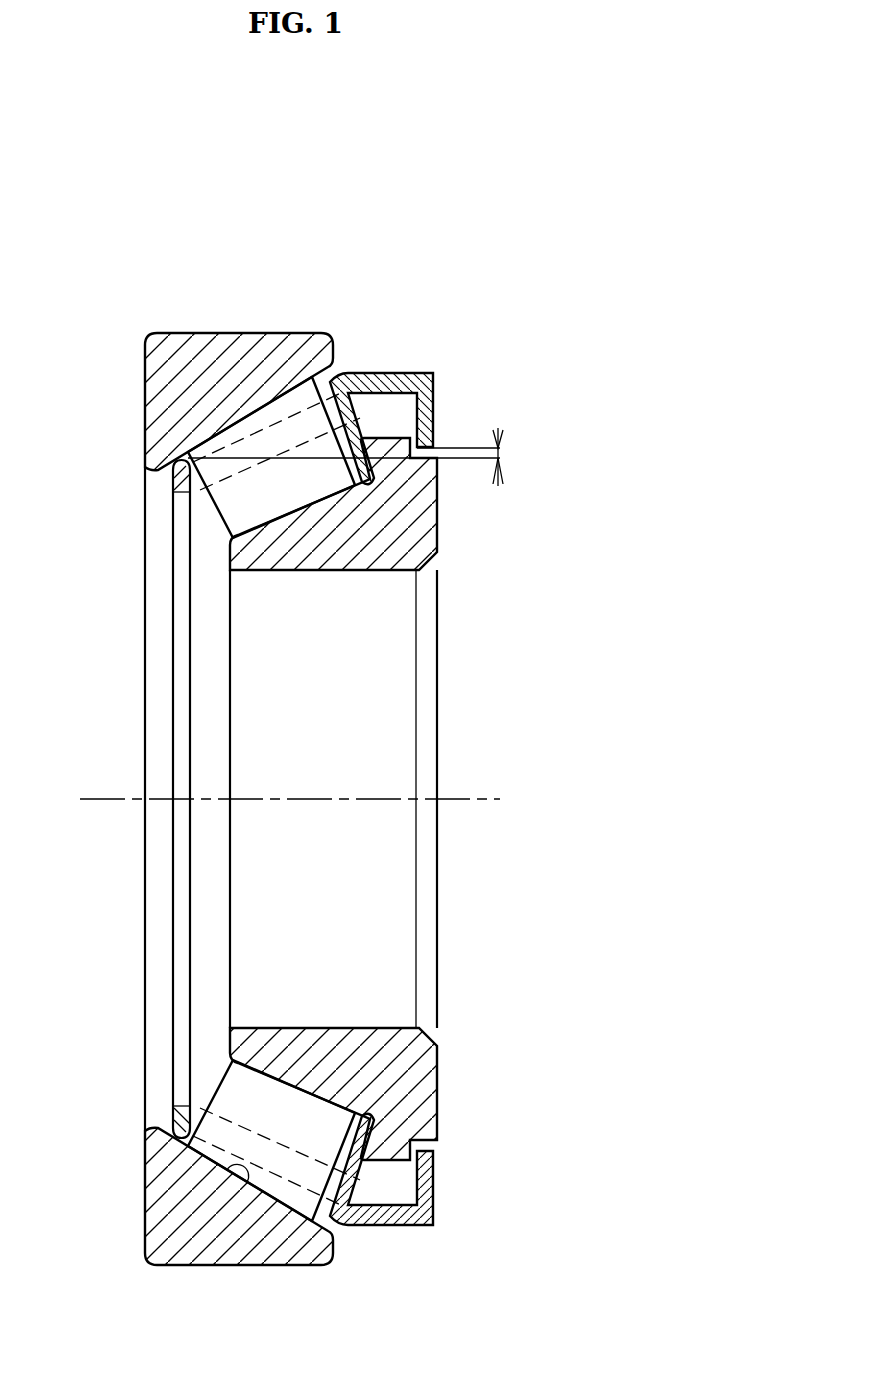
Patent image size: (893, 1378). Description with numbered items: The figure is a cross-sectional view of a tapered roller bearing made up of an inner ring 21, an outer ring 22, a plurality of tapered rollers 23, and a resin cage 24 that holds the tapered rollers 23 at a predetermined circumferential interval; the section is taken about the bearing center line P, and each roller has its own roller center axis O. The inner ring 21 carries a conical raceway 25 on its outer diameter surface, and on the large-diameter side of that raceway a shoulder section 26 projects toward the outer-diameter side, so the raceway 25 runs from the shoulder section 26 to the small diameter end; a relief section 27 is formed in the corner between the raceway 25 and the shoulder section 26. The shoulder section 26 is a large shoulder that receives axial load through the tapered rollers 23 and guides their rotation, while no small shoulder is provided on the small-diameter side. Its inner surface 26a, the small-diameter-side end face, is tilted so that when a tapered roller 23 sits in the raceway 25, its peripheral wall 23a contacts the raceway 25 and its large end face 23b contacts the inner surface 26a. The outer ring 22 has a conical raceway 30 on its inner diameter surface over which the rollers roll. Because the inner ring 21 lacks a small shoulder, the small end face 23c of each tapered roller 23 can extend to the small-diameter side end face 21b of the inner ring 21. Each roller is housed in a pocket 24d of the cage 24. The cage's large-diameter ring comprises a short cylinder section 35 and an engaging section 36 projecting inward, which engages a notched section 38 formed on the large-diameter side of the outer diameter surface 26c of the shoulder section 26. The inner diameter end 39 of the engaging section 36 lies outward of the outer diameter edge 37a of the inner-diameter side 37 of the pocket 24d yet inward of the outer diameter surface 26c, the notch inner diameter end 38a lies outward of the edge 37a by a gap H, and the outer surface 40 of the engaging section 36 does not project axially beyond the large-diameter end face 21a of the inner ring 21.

The inner ring 21 is at (438, 540).
The end face of the inner ring on the large-diameter side 21a is at (438, 522).
The small-diameter side end face of the inner ring 21b is at (207, 553).
The outer ring 22 is at (254, 334).
The tapered roller 23 is at (281, 1122).
The peripheral wall of the tapered roller 23a is at (297, 480).
The large end face of the tapered roller 23b is at (352, 378).
The small end face of the tapered roller 23c is at (200, 500).
The cage 24 is at (433, 1185).
The pocket 24d is at (293, 373).
The raceway of the inner ring 25 is at (213, 1078).
The shoulder section 26 is at (385, 1148).
The inner surface of the shoulder section 26a is at (348, 1135).
The outer diameter surface of the shoulder section 26c is at (388, 436).
The relief section 27 is at (342, 1103).
The raceway of the outer ring 30 is at (246, 1168).
The short cylinder section 35 is at (403, 1227).
The engaging section 36 is at (435, 398).
The inner-diameter side of the pocket 37 is at (204, 458).
The outer diameter edge of the inner-diameter side of the pocket 37a is at (182, 457).
The notched section 38 is at (431, 1150).
The notch inner diameter end 38a is at (435, 443).
The inner diameter end of the engaging section 39 is at (438, 470).
The outer surface of the engaging section 40 is at (431, 1203).
The gap H is at (358, 457).
The roller center axis O is at (262, 562).
The bearing center line P is at (470, 800).